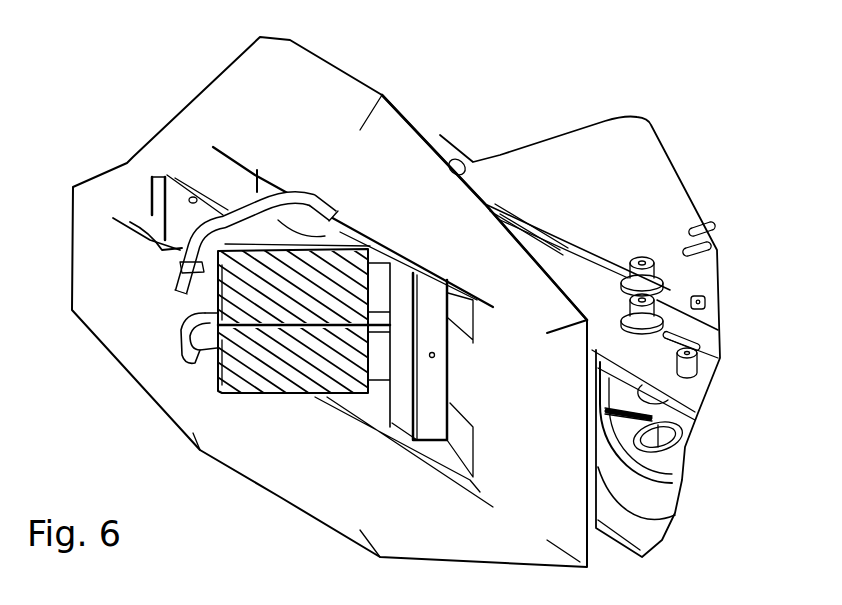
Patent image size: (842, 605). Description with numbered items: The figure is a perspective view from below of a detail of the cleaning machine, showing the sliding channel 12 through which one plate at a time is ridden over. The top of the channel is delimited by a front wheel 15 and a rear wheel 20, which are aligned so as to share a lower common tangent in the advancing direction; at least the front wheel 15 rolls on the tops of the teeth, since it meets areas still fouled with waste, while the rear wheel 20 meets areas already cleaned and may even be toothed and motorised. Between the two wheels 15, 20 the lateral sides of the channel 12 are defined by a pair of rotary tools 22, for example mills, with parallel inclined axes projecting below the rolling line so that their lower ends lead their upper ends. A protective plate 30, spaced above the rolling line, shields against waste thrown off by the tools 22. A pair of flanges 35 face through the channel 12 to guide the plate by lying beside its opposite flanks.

The plate 30 is at (253, 103).
The rear wheel 20 is at (650, 499).
The front wheel 15 is at (157, 190).
The flanges 35 is at (182, 270).
The rotary tools 22 is at (283, 402).
The sliding channel 12 is at (332, 328).